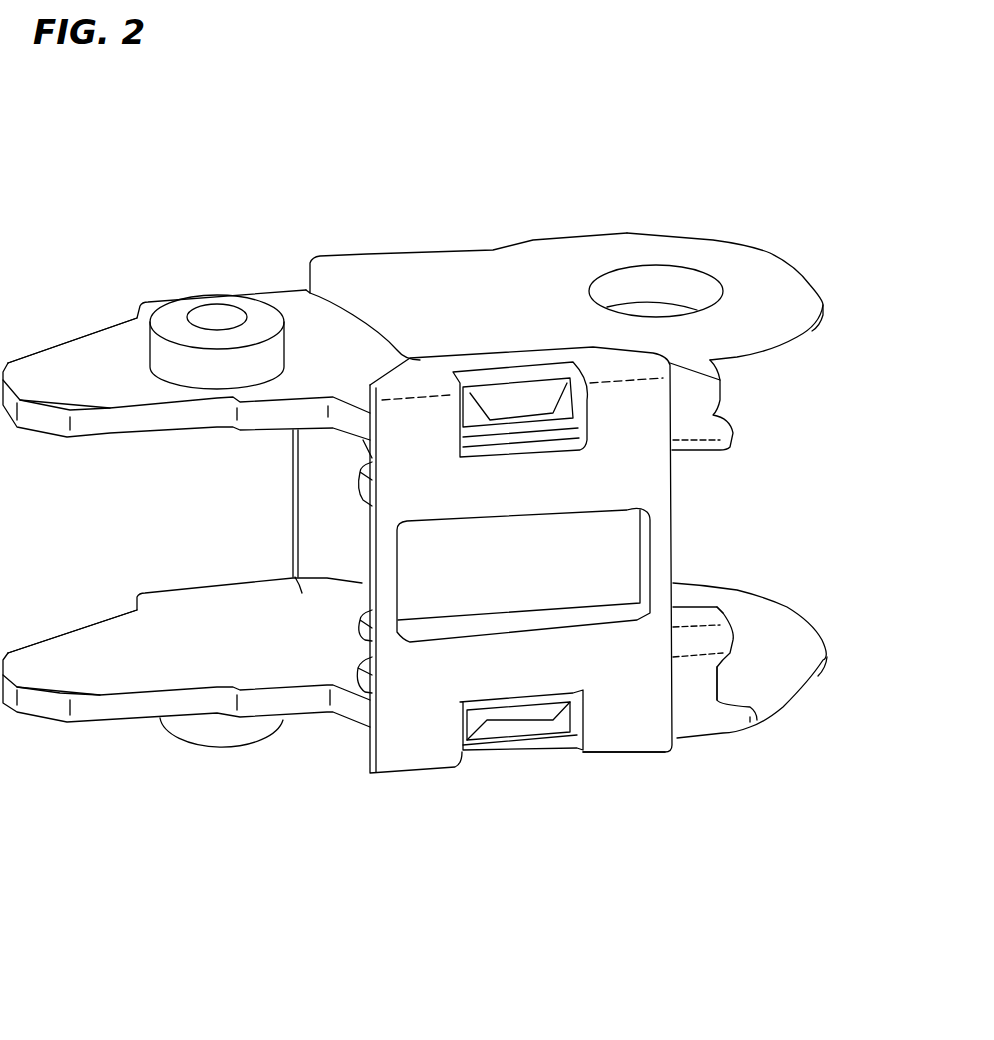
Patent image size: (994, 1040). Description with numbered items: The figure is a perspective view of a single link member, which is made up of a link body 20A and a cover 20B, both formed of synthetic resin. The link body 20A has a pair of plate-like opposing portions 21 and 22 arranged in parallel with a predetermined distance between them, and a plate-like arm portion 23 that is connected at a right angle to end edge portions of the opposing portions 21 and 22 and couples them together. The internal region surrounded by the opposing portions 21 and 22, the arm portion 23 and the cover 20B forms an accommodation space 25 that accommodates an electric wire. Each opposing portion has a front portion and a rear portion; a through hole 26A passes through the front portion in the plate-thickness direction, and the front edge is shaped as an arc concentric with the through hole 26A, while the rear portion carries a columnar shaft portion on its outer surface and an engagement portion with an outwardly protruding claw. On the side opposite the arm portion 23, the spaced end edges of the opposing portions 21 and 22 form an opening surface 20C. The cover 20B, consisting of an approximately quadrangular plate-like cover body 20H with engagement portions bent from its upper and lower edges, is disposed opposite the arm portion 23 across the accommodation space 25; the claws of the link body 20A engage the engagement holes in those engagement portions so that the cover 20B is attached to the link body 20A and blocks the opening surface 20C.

The opposing portion 21 is at (391, 213).
The opposing portion 22 is at (325, 748).
The arm portion 23 is at (315, 465).
The accommodation space 25 is at (136, 548).
The through hole 26A is at (668, 290).
The link body 20A is at (497, 270).
The cover 20B is at (582, 800).
The opening surface 20C is at (770, 689).
The cover body 20H is at (622, 722).